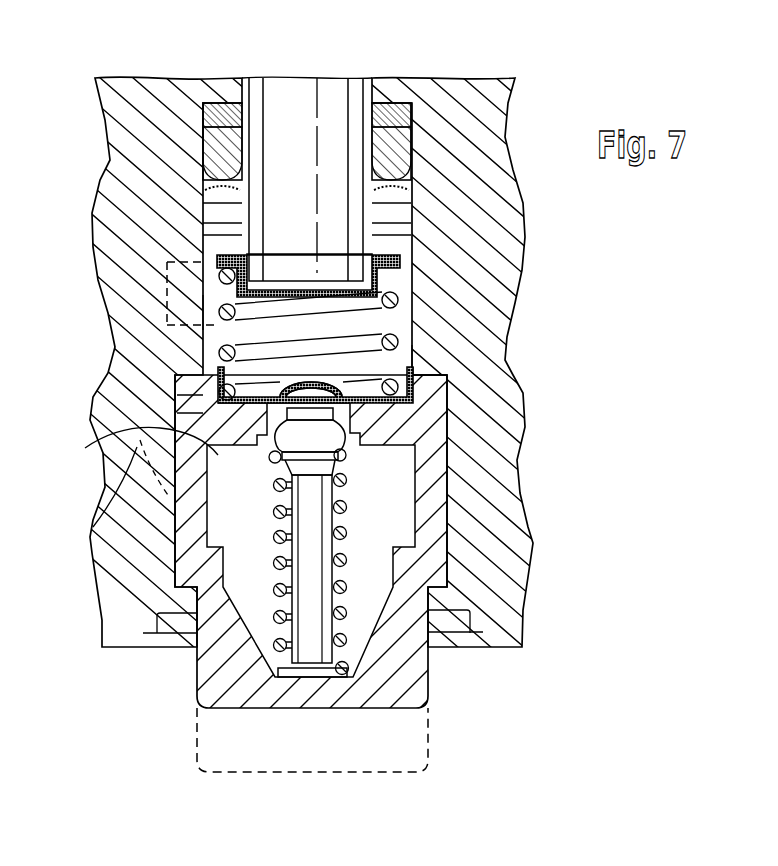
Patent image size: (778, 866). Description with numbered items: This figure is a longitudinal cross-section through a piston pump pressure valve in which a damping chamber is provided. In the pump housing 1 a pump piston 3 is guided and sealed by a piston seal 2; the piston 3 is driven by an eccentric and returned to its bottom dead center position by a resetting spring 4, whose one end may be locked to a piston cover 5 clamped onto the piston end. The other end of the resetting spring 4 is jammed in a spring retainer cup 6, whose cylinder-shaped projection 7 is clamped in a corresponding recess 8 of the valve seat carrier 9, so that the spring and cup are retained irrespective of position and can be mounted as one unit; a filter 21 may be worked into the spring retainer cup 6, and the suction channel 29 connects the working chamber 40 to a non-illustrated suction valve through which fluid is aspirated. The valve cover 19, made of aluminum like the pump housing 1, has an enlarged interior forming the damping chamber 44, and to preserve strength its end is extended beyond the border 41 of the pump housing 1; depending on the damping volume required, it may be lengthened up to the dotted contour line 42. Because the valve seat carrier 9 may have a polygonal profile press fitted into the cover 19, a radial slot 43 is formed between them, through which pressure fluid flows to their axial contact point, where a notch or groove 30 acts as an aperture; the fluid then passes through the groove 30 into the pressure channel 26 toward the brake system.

The pump housing 1 is at (467, 282).
The piston seal 2 is at (397, 160).
The pump piston 3 is at (330, 103).
The resetting spring 4 is at (400, 291).
The piston cover 5 is at (282, 284).
The spring retainer cup 6 is at (418, 356).
The cylinder-shaped projection 7 is at (278, 399).
The recess 8 is at (405, 381).
The valve seat carrier 9 is at (425, 400).
The valve cover 19 is at (425, 508).
The filter 21 is at (200, 312).
The pressure channel 26 is at (93, 527).
The suction channel 29 is at (167, 268).
The groove 30 is at (175, 395).
The working chamber 40 is at (355, 322).
The border 41 is at (130, 647).
The contour line 42 is at (428, 732).
The radial slot 43 is at (160, 440).
The damping chamber 44 is at (380, 485).